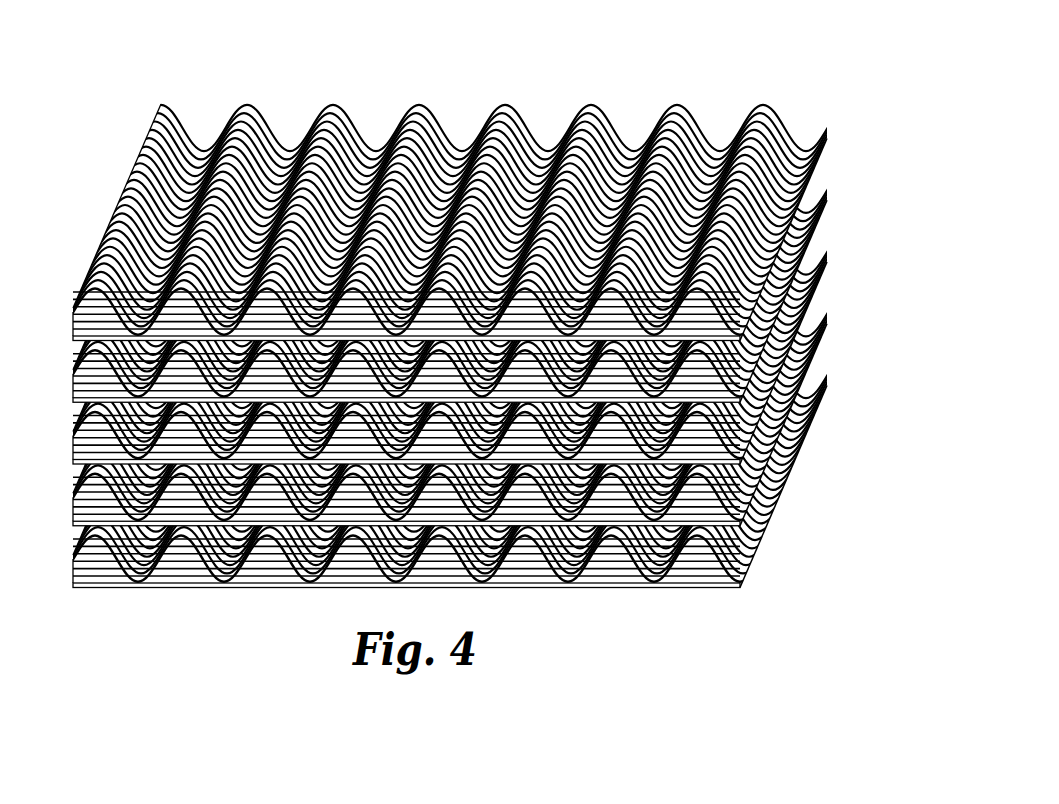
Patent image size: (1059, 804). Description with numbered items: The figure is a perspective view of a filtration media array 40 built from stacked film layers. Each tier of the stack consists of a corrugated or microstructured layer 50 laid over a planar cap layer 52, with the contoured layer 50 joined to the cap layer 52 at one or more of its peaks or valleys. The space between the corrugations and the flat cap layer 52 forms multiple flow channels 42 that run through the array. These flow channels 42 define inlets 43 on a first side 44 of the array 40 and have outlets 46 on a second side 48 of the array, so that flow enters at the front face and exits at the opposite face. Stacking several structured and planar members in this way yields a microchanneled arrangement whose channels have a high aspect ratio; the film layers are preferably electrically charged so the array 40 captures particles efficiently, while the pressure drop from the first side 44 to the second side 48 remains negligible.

The filtration media array 40 is at (686, 56).
The flow channels 42 is at (460, 594).
The inlets 43 is at (406, 592).
The first side 44 is at (385, 496).
The outlets 46 is at (748, 110).
The second side 48 is at (825, 137).
The corrugated or microstructured layer 50 is at (73, 306).
The cap layer 52 is at (68, 343).